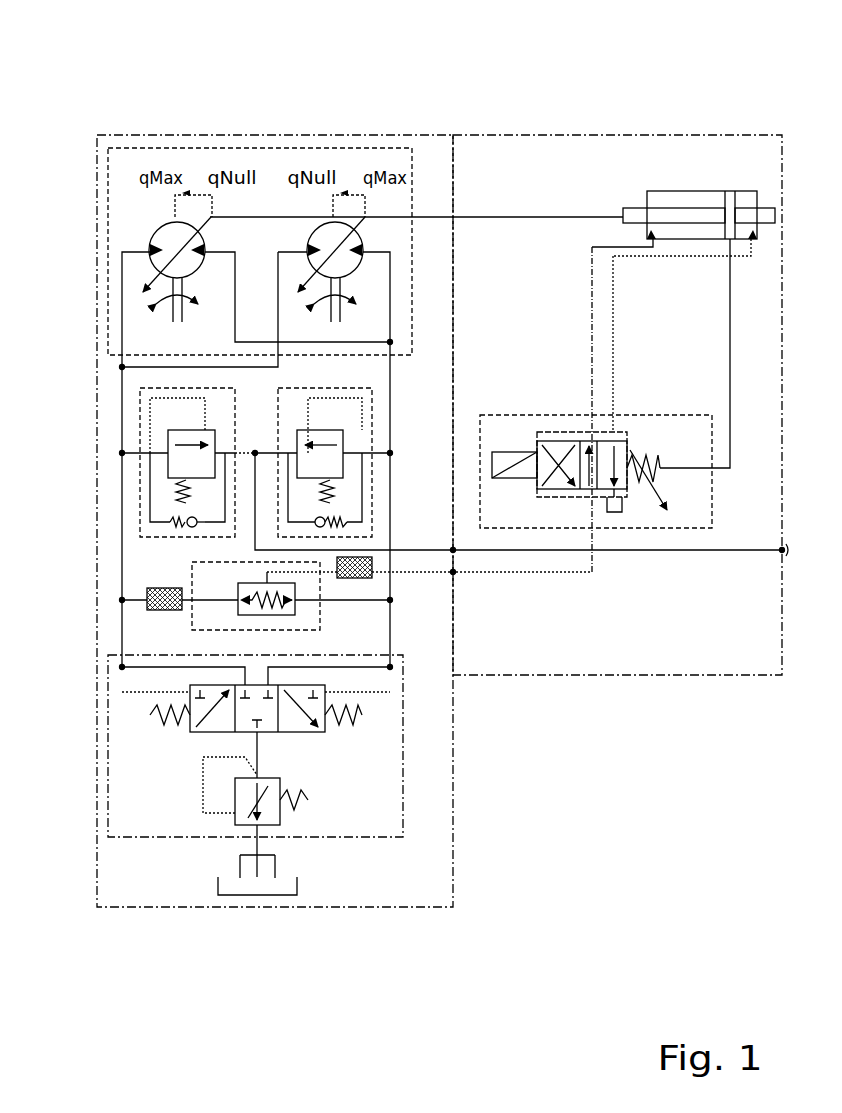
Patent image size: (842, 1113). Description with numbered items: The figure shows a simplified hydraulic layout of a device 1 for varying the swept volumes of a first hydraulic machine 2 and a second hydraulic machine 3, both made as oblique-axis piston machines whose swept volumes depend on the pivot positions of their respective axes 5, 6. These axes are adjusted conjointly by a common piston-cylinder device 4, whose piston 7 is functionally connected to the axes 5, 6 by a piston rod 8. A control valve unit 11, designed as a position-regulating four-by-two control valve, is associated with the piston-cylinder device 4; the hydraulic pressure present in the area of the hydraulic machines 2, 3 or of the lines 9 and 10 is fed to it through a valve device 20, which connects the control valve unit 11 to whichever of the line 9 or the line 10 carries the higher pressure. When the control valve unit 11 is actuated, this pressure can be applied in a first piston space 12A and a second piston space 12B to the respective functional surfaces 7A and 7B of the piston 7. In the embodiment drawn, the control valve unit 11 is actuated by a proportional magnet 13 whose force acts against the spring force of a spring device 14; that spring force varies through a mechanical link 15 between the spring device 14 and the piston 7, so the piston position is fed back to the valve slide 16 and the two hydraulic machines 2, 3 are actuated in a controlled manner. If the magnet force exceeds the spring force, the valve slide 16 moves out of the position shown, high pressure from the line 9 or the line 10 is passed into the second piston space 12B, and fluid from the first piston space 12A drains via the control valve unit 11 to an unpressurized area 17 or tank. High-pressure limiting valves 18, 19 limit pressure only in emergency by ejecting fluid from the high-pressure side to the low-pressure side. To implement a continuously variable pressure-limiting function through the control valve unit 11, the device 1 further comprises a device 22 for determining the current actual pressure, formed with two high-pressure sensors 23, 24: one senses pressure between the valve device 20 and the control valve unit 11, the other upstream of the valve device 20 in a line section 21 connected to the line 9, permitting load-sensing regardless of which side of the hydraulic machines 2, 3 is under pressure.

The device 1 is at (605, 108).
The first hydraulic machine 2 is at (172, 233).
The second hydraulic machine 3 is at (403, 217).
The piston-cylinder device 4 is at (731, 178).
The axis of first hydraulic machine 5 is at (199, 237).
The axis of second hydraulic machine 6 is at (351, 240).
The piston 7 is at (728, 195).
The first functional surface 7A is at (722, 194).
The second functional surface 7B is at (740, 198).
The piston rod 8 is at (632, 205).
The line 9 is at (122, 367).
The line 10 is at (237, 268).
The control valve unit 11 is at (643, 553).
The first piston space 12A is at (669, 198).
The second piston space 12B is at (767, 210).
The proportional magnet 13 is at (490, 427).
The spring device 14 is at (662, 513).
The mechanical link 15 is at (737, 394).
The valve slide 16 is at (572, 478).
The unpressurized area 17 is at (615, 514).
The high-pressure limiting valve 18 is at (182, 466).
The high-pressure limiting valve 19 is at (317, 460).
The valve device 20 is at (247, 612).
The line section 21 is at (138, 596).
The device for determining current actual pressure 22 is at (352, 588).
The high-pressure sensor 23 is at (362, 578).
The high-pressure sensor 24 is at (150, 610).